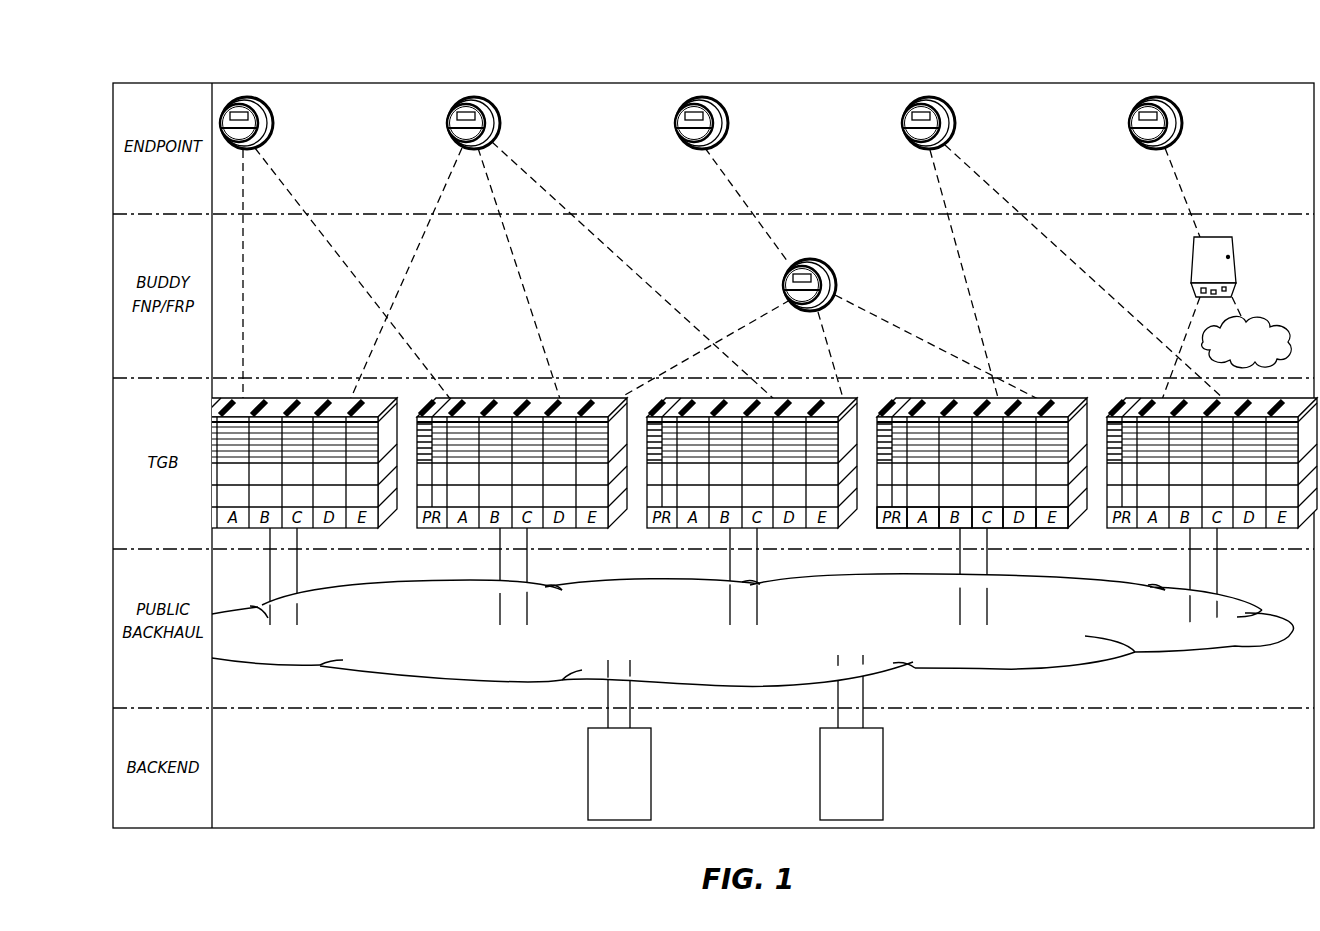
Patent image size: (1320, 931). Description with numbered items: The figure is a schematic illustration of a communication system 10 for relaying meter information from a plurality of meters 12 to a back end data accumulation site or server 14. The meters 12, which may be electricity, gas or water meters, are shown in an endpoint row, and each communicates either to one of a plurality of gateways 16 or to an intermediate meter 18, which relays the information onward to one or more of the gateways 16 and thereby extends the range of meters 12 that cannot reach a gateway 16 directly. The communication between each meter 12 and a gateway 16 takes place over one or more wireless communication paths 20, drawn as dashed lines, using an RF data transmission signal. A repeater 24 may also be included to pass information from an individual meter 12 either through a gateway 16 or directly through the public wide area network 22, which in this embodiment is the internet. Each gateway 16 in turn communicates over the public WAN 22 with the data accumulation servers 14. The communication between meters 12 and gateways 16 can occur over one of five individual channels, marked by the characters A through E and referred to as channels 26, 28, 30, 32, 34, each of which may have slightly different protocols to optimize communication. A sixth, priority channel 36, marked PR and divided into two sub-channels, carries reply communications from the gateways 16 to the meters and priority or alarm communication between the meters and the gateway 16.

The communication system 10 is at (1066, 102).
The meter 12 is at (262, 110).
The back end data accumulation server 14 is at (651, 745).
The gateway 16 is at (374, 399).
The intermediate meter 18 is at (786, 277).
The wireless communication path 20 is at (245, 272).
The public wide area network 22 is at (1185, 640).
The repeater 24 is at (1222, 245).
The communication channel A 26 is at (926, 529).
The communication channel B 28 is at (953, 529).
The communication channel C 30 is at (995, 529).
The communication channel D 32 is at (1027, 529).
The communication channel E 34 is at (1061, 529).
The priority channel 36 is at (893, 529).